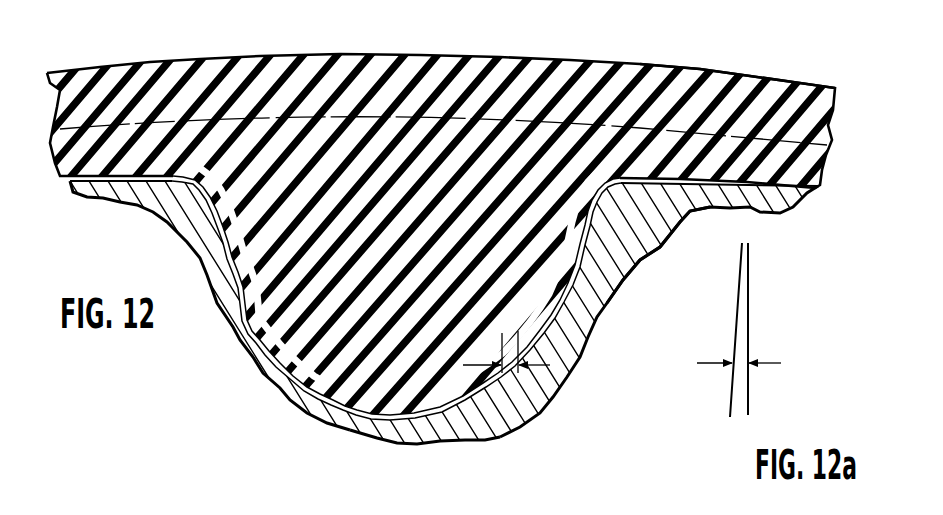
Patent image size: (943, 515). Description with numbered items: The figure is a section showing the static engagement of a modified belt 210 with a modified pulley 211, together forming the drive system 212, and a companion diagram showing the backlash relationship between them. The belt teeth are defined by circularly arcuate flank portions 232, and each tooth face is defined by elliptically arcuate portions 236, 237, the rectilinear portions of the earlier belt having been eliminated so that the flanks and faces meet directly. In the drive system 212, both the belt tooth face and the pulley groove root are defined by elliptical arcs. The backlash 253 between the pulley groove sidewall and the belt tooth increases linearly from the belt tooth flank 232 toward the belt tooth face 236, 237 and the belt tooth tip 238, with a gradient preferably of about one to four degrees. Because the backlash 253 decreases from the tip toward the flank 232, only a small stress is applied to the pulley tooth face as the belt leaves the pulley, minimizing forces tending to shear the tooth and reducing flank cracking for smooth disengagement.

In FIG. 12, the belt 210 is at (540, 52).
In FIG. 12, the drive system 212 is at (691, 47).
In FIG. 12, the pulley 211 is at (592, 305).
In FIG. 12, the flank portion 232 is at (597, 201).
In FIG. 12, the elliptically arcuate portion 236 is at (314, 333).
In FIG. 12, the elliptically arcuate portion 237 is at (534, 336).
In FIG. 12, the belt tooth tip 238 is at (403, 444).
In FIG. 12, the backlash 253 is at (551, 352).
In FIG. 12A, the backlash 253 is at (759, 330).